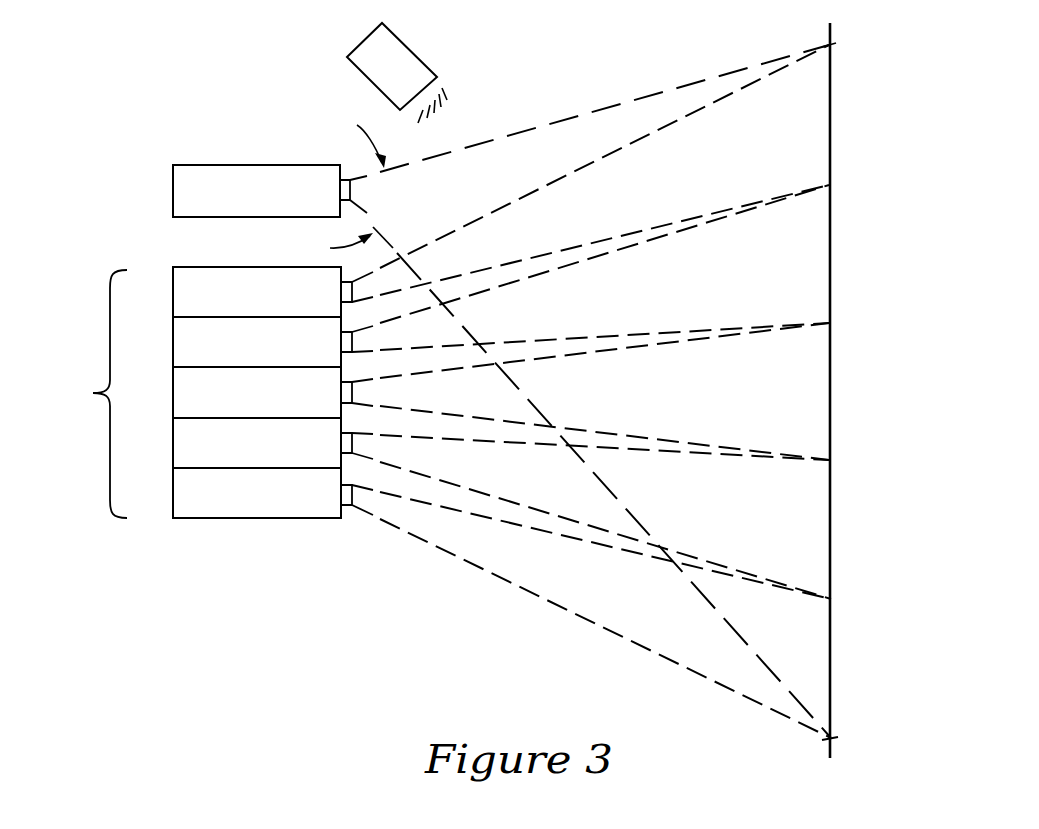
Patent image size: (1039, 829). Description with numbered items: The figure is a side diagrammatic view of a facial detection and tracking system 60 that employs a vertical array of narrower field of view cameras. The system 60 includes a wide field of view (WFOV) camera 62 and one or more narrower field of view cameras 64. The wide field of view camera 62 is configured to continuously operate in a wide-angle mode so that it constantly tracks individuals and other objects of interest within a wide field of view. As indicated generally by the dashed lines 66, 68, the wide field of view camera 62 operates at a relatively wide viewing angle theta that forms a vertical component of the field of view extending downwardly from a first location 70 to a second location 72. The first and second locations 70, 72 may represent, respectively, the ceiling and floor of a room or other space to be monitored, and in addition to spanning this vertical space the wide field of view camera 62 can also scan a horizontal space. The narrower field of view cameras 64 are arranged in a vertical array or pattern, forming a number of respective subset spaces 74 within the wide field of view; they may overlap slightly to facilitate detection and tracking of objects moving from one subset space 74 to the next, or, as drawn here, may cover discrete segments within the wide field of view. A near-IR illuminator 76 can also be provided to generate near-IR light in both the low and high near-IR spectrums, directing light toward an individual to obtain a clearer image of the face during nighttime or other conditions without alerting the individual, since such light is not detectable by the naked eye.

The facial detection and tracking system 60 is at (885, 178).
The wide field of view (WFOV) camera 62 is at (180, 192).
The narrower field of view cameras 64 is at (202, 392).
The dashed line 66 is at (611, 105).
The dashed line 68 is at (773, 673).
The first location 70 is at (830, 45).
The second location 72 is at (833, 739).
The subset spaces 74 is at (778, 389).
The near-IR illuminator 76 is at (405, 55).